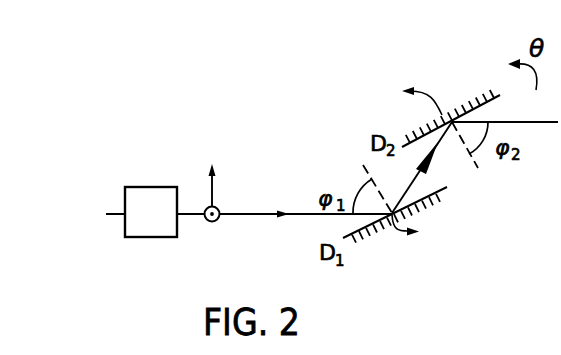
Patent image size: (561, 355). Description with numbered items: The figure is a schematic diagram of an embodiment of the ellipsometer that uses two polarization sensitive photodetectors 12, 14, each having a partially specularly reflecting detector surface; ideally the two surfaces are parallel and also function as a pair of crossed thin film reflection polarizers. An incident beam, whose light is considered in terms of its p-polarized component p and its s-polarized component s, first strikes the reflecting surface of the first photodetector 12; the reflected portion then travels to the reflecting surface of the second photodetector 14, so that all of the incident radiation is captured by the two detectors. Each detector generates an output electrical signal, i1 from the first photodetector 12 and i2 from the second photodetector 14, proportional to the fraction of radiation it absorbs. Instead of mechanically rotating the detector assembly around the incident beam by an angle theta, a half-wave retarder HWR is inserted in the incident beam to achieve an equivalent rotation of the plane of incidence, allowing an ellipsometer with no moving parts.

The polarization sensitive photodetector 12 is at (364, 242).
The polarization sensitive photodetector 14 is at (447, 110).
The half-wave retarder HWR is at (151, 212).
The p-polarized light p is at (212, 175).
The s-polarized light s is at (212, 228).
The output electrical signal i1 is at (415, 233).
The output electrical signal i2 is at (410, 96).